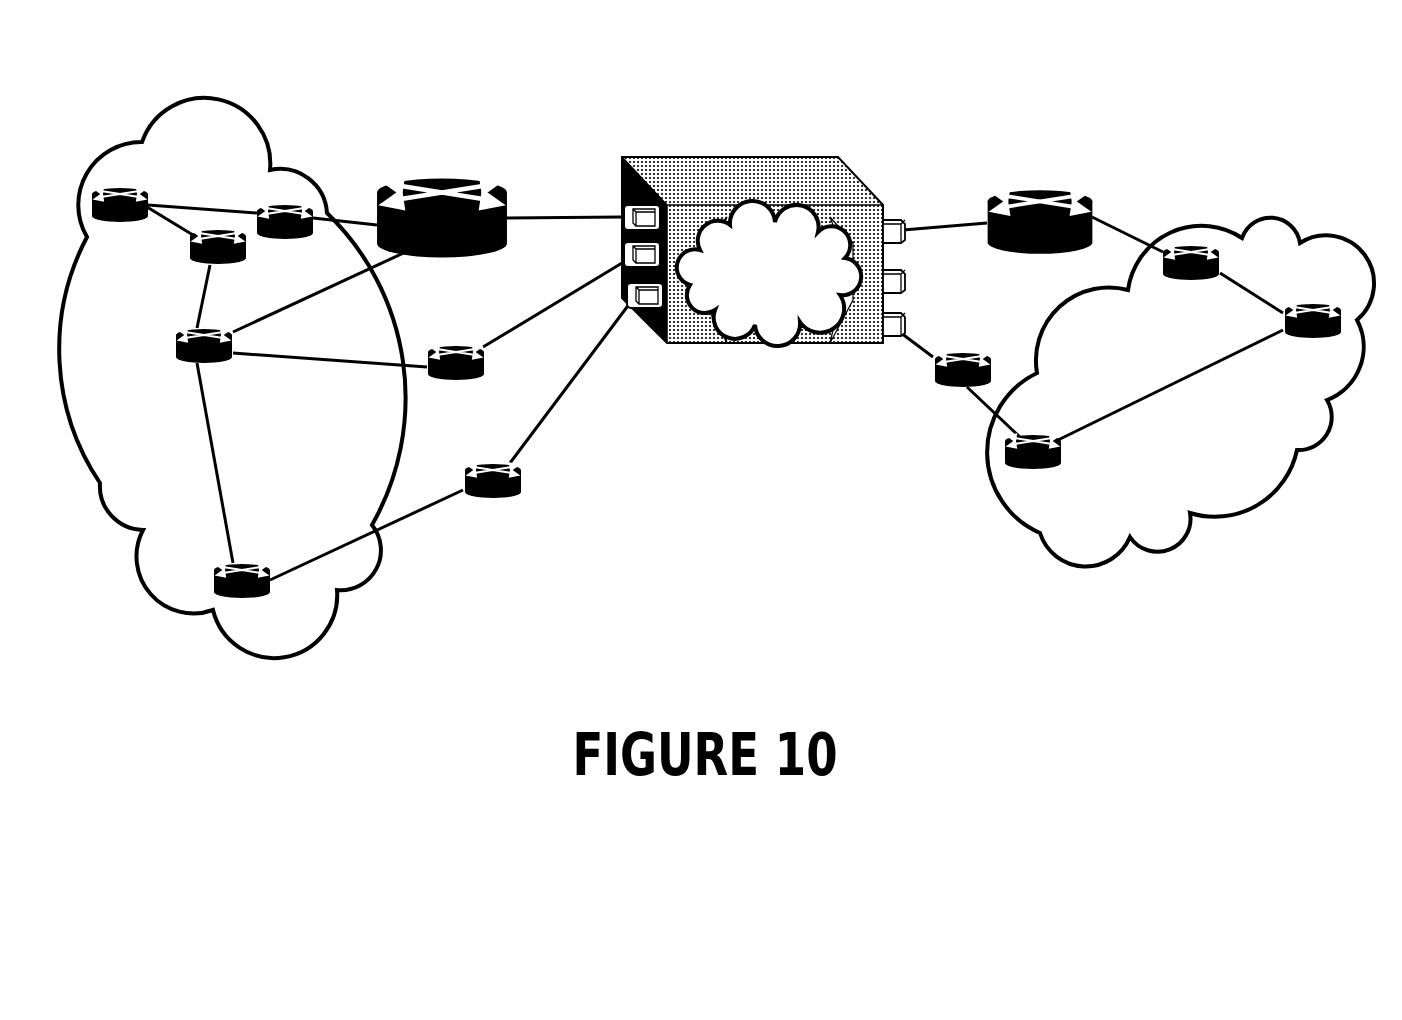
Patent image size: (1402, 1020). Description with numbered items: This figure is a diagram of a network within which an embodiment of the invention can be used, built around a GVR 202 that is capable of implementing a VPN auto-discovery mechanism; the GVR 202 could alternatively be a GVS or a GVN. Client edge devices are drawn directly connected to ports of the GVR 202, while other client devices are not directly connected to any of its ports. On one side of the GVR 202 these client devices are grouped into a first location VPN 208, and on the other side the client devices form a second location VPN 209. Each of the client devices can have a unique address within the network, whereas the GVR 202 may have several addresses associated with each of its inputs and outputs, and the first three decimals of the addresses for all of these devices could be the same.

The GVR 202 is at (742, 158).
The first location VPN 208 is at (327, 640).
The second location VPN 209 is at (1163, 558).